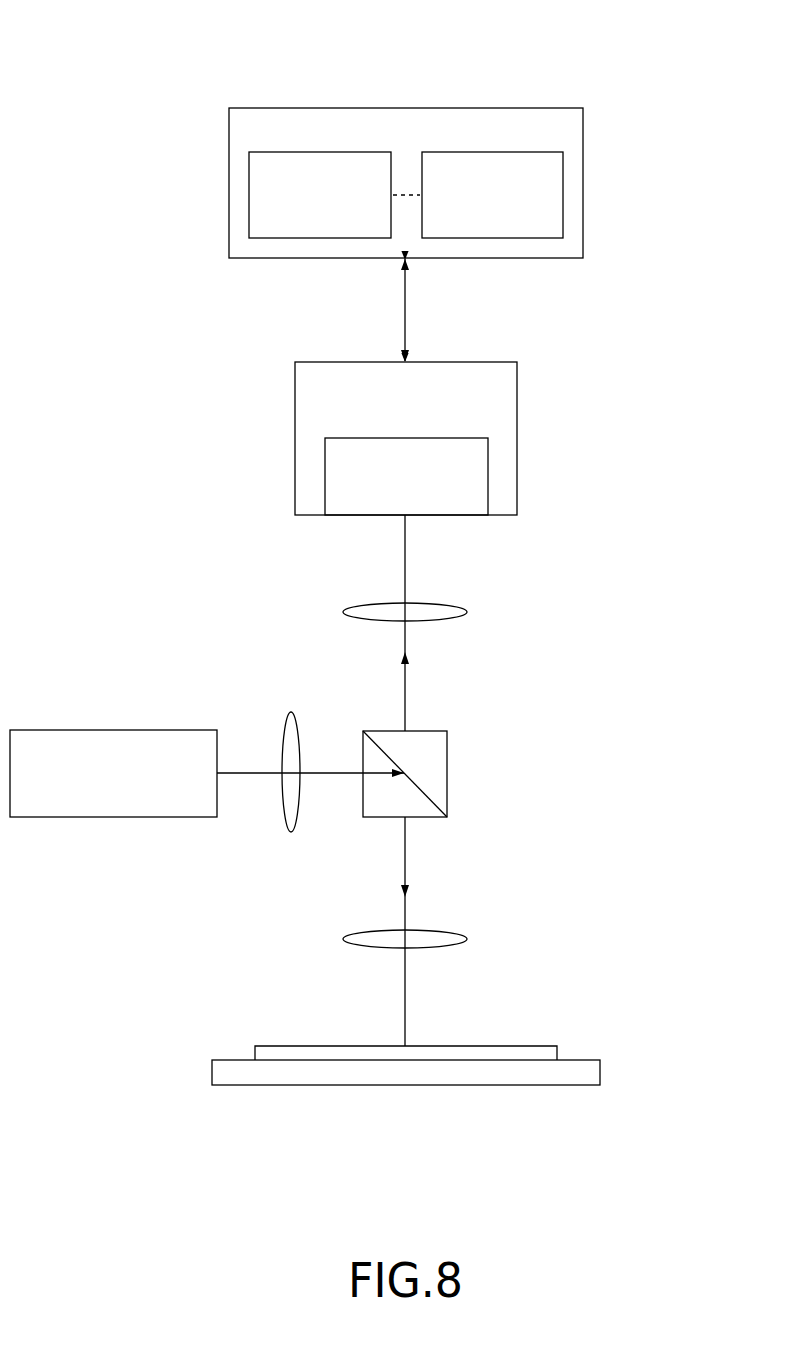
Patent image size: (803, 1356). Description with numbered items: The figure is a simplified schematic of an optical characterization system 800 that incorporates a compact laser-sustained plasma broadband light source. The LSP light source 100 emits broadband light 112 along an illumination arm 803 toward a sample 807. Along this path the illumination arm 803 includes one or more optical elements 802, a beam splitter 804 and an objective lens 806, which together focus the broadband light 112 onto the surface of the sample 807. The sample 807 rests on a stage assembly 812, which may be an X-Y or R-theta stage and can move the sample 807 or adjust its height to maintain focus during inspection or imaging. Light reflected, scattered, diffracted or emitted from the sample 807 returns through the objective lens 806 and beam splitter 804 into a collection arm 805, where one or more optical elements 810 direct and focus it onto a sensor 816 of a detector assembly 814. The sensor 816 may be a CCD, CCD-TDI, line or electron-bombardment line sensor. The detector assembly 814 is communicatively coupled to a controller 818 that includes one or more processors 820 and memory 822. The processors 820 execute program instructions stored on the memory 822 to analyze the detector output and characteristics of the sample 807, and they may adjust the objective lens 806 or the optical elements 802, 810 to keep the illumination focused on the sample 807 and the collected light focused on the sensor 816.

The optical characterization system 800 is at (113, 41).
The controller 818 is at (425, 141).
The processors 820 is at (339, 206).
The memory 822 is at (512, 206).
The detector assembly 814 is at (425, 411).
The sensor 816 is at (425, 489).
The illumination arm 803 is at (267, 605).
The optical elements 810 is at (457, 605).
The collection arm 805 is at (502, 694).
The LSP light source 100 is at (132, 782).
The broadband light 112 is at (250, 770).
The optical elements 802 is at (288, 832).
The beam splitter 804 is at (447, 770).
The objective lens 806 is at (457, 932).
The sample 807 is at (557, 1055).
The stage assembly 812 is at (600, 1072).